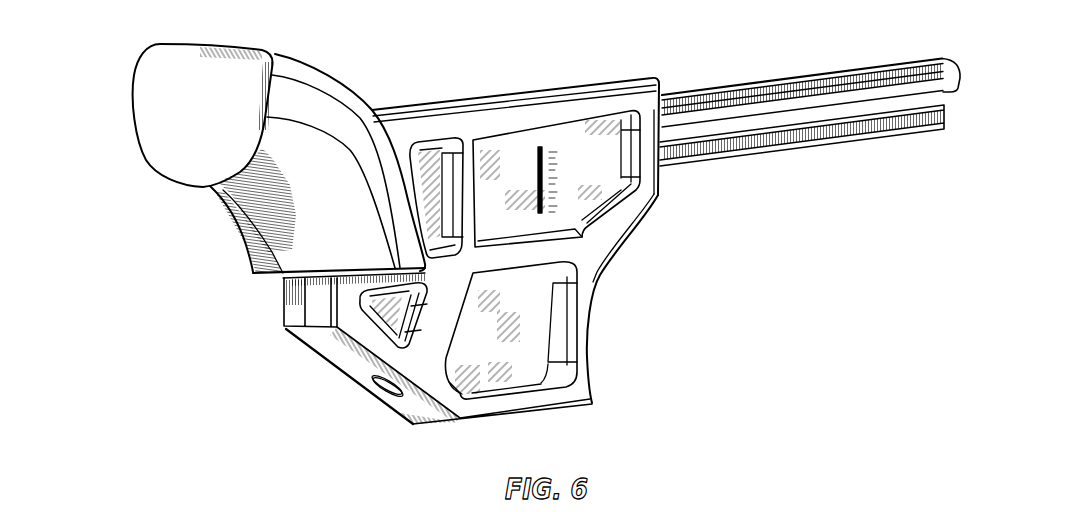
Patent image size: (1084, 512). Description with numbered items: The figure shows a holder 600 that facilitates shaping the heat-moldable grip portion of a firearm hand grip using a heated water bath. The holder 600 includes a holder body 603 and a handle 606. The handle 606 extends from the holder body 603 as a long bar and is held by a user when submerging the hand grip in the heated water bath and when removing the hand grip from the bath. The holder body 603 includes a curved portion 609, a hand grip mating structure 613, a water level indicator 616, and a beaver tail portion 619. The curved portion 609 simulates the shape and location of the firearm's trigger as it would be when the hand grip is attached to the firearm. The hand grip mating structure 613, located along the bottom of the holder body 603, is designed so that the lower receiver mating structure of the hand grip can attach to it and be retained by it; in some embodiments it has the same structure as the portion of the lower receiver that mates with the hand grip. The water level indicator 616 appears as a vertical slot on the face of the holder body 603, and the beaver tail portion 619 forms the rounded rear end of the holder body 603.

The holder 600 is at (501, 217).
The holder body 603 is at (437, 128).
The handle 606 is at (857, 62).
The curved portion 609 is at (658, 228).
The hand grip mating structure 613 is at (411, 430).
The water level indicator 616 is at (537, 170).
The beaver tail portion 619 is at (122, 45).